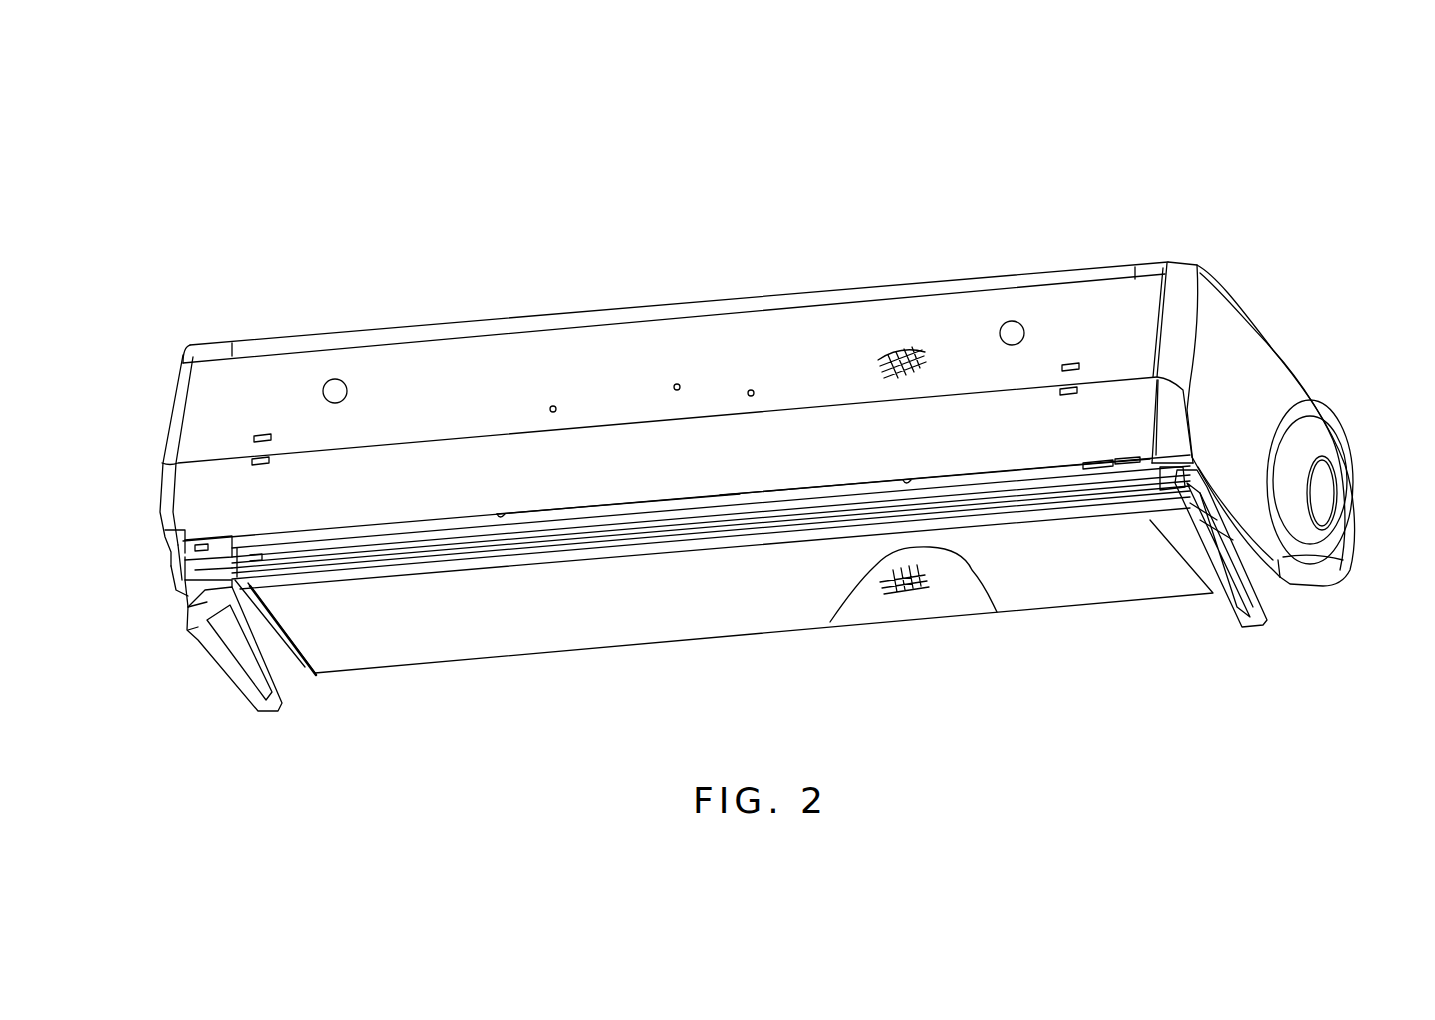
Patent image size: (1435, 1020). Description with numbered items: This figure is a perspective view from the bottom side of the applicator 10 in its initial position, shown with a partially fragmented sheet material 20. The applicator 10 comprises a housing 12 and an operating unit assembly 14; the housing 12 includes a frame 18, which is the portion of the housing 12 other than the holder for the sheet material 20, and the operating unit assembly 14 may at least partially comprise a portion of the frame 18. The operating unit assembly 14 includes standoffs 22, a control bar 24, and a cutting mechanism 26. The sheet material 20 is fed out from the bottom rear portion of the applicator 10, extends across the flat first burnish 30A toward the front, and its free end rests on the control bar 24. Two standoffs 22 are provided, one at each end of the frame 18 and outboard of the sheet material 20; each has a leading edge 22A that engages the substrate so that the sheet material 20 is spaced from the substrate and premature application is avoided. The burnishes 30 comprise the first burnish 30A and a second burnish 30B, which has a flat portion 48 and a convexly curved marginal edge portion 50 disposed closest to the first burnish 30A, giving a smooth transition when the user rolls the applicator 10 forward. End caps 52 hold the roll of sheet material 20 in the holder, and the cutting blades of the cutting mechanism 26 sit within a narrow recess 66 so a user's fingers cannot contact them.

The applicator 10 is at (1092, 196).
The housing 12 is at (750, 303).
The operating unit assembly 14 is at (158, 617).
The frame 18 is at (1250, 367).
The sheet material 20 is at (738, 610).
The standoffs 22 is at (282, 703).
The leading edge 22A is at (232, 673).
The control bar 24 is at (517, 563).
The cutting mechanism 26 is at (225, 580).
The burnishing surfaces 30 is at (903, 352).
The first burnish 30A is at (927, 580).
The second burnish 30B is at (927, 360).
The flat portion 48 is at (1087, 320).
The marginal edge portion 50 is at (1117, 433).
The end caps 52 is at (1310, 444).
The recess 66 is at (278, 565).